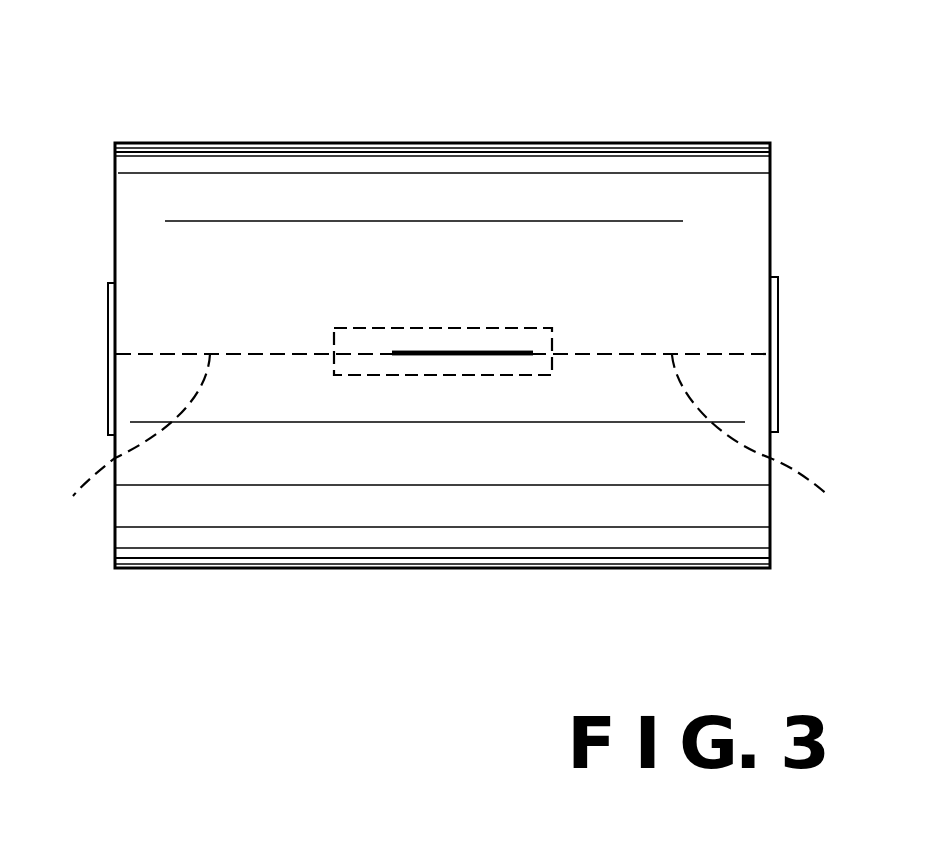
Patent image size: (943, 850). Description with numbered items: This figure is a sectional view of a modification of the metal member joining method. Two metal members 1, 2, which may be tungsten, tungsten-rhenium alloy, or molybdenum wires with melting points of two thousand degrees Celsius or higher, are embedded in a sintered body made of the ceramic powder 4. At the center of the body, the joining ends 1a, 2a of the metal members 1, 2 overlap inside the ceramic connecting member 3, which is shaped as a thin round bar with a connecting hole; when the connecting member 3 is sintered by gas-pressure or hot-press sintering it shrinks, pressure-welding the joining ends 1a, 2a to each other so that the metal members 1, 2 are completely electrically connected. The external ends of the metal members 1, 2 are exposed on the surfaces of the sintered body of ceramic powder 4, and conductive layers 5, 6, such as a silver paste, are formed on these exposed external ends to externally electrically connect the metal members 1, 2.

The metal member 1 is at (252, 450).
The metal member 2 is at (647, 444).
The joining end 1a is at (498, 352).
The joining end 2a is at (501, 298).
The connecting member 3 is at (475, 375).
The ceramic powder 4 is at (280, 186).
The conductive layer 5 is at (108, 385).
The conductive layer 6 is at (778, 322).